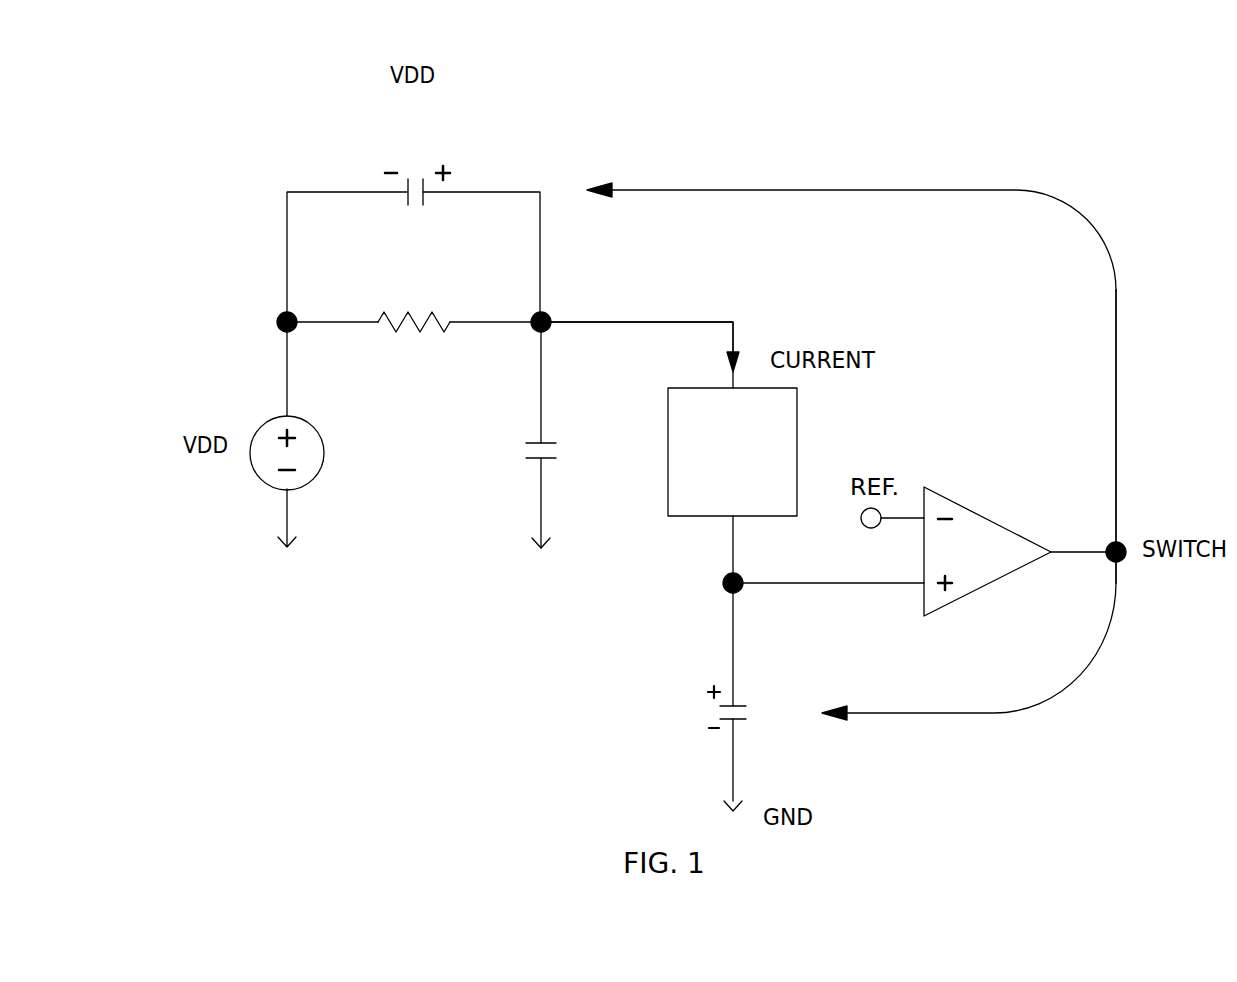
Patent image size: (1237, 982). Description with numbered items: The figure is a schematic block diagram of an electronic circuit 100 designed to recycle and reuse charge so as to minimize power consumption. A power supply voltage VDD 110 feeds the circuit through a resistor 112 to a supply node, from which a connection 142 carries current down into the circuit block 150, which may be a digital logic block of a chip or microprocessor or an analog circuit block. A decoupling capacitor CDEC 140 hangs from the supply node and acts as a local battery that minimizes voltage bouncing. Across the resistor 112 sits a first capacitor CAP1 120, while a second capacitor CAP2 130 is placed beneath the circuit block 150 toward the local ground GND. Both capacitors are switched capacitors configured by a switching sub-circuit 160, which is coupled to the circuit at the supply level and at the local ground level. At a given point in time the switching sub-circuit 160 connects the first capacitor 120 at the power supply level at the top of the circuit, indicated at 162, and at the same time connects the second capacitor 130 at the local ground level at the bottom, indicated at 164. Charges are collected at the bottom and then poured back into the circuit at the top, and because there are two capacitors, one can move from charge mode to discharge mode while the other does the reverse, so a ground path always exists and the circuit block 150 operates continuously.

The electronic circuit 100 is at (934, 105).
The power supply voltage VDD 110 is at (262, 481).
The resistor 112 is at (381, 325).
The first capacitor (CAP1) 120 is at (428, 202).
The second capacitor (CAP2) 130 is at (740, 720).
The decoupling capacitor (CDEC) 140 is at (550, 443).
The connection to current source 142 is at (670, 322).
The circuit block 150 is at (752, 467).
The switching sub-circuit 160 is at (1116, 395).
The connection at power supply level 162 is at (630, 190).
The connection at local ground level 164 is at (850, 713).